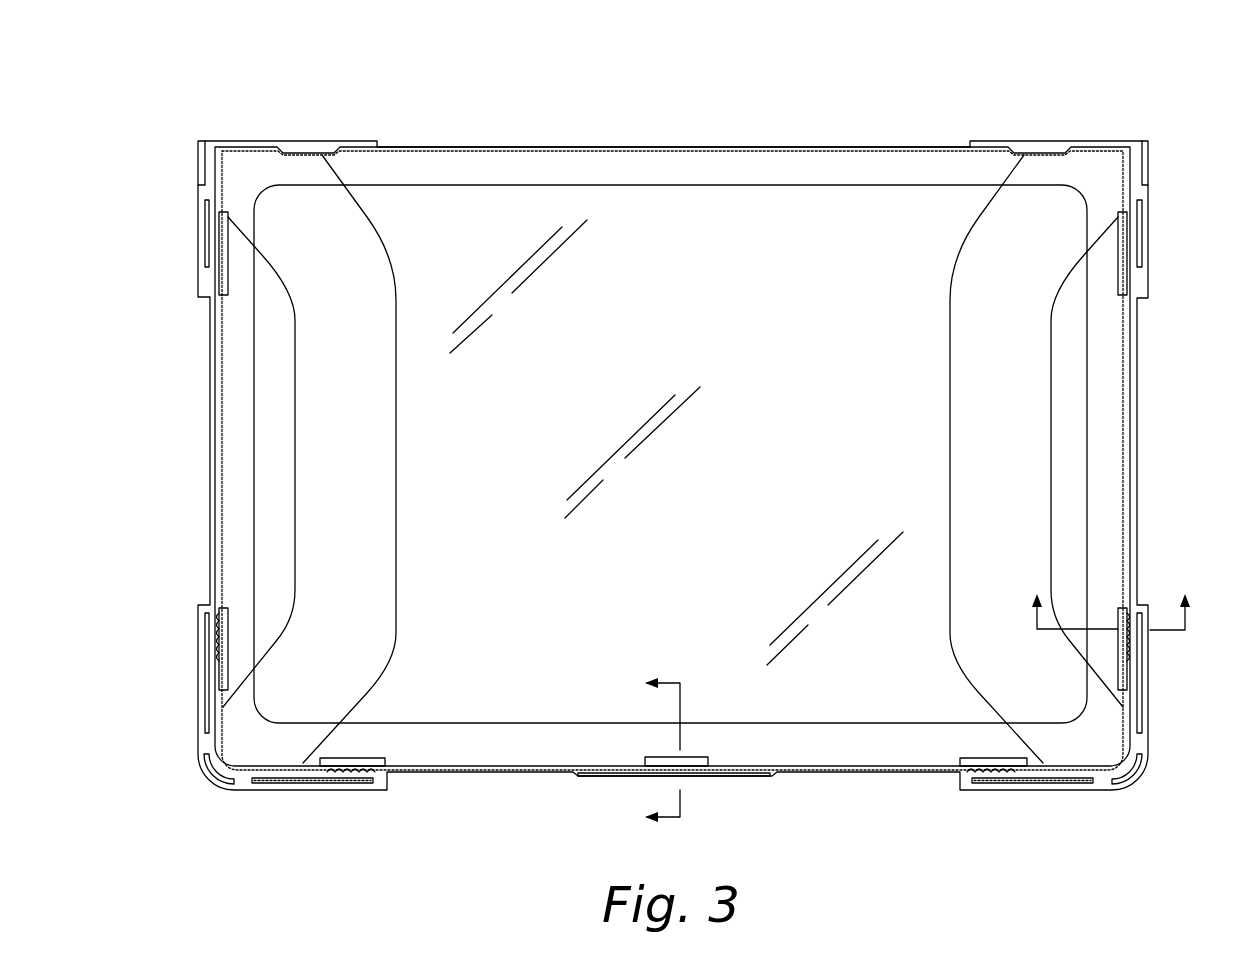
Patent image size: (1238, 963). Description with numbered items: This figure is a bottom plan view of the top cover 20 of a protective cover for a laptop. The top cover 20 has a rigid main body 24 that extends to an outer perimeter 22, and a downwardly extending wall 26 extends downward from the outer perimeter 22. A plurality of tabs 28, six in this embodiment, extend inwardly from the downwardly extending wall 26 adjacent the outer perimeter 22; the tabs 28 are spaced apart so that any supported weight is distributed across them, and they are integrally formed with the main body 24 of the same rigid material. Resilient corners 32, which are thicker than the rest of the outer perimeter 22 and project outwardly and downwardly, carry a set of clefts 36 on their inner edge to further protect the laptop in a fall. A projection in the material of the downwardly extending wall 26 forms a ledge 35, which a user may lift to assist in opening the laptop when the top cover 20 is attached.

The top cover 20 is at (583, 72).
The outer perimeter 22 is at (1127, 388).
The main body 24 is at (753, 222).
The downwardly extending wall 26 is at (1135, 463).
The tabs 28 is at (223, 275).
The corners 32 is at (205, 775).
The ledge 35 is at (777, 776).
The clefts 36 is at (1142, 683).